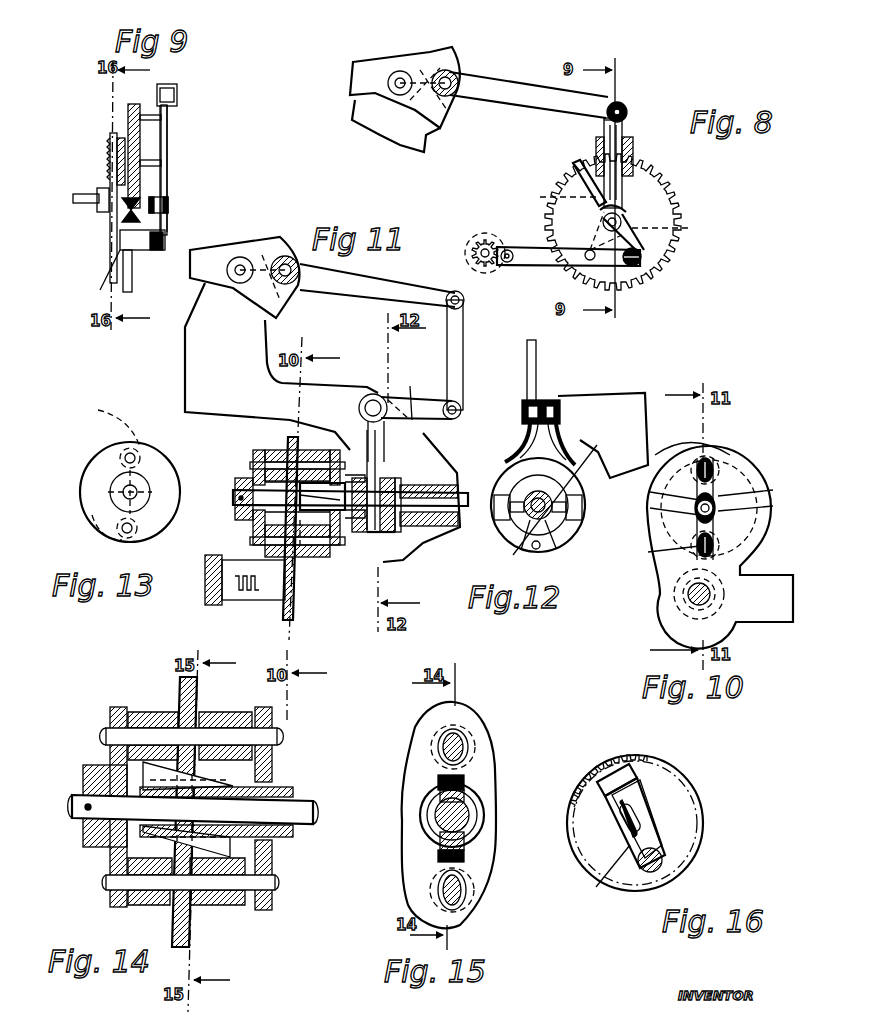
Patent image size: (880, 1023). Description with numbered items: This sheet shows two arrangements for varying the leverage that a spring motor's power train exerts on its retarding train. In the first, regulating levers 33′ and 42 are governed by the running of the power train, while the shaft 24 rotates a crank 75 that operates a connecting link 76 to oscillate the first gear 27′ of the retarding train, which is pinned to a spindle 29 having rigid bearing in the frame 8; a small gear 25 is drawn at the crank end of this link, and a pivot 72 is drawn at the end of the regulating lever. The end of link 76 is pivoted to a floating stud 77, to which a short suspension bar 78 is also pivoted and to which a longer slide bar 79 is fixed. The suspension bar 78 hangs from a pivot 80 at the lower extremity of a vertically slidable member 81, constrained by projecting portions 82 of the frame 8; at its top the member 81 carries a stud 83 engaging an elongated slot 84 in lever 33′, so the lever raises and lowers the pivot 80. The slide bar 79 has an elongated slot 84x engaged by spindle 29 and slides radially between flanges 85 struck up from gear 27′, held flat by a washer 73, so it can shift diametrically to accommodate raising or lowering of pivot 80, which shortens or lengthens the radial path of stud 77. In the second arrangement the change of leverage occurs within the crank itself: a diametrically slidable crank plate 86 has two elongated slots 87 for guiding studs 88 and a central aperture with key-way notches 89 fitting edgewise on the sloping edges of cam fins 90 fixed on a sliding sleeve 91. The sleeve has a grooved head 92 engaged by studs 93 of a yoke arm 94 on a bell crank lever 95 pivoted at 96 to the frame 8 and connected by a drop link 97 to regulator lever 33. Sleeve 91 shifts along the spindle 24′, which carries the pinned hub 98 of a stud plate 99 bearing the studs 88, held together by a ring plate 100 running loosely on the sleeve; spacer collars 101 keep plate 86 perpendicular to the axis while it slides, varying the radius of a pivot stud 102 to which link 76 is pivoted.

In FIG. 9, the frame 8 is at (130, 107).
In FIG. 8, the frame 8 is at (385, 130).
In FIG. 11, the frame 8 is at (458, 446).
In FIG. 12, the frame 8 is at (603, 435).
In FIG. 15, the shaft of the power train 24 is at (470, 815).
In FIG. 11, the spindle 24′ is at (466, 494).
In FIG. 12, the spindle 24′ is at (494, 488).
In FIG. 10, the spindle 24′ is at (696, 508).
In FIG. 13, the spindle 24′ is at (134, 488).
In FIG. 14, the spindle 24′ is at (313, 812).
In FIG. 8, the gear 25 is at (485, 242).
In FIG. 9, the first gear of the retarding train 27′ is at (109, 141).
In FIG. 8, the first gear of the retarding train 27′ is at (672, 183).
In FIG. 16, the first gear of the retarding train 27′ is at (629, 758).
In FIG. 9, the spindle 29 is at (92, 194).
In FIG. 16, the spindle 29 is at (640, 820).
In FIG. 11, the regulator lever 33 is at (377, 285).
In FIG. 9, the regulating lever 33′ is at (172, 87).
In FIG. 8, the regulating lever 33′ is at (529, 95).
In FIG. 8, the regulating lever 42 is at (372, 70).
In FIG. 11, the pivot 72 is at (463, 306).
In FIG. 9, the washer 73 is at (125, 213).
In FIG. 8, the washer 73 is at (603, 223).
In FIG. 8, the crank 75 is at (495, 268).
In FIG. 9, the connecting link 76 is at (155, 256).
In FIG. 8, the connecting link 76 is at (530, 247).
In FIG. 11, the connecting link 76 is at (205, 602).
In FIG. 10, the connecting link 76 is at (793, 606).
In FIG. 9, the floating stud 77 is at (166, 246).
In FIG. 8, the floating stud 77 is at (641, 266).
In FIG. 16, the floating stud 77 is at (660, 856).
In FIG. 9, the suspension bar 78 is at (166, 236).
In FIG. 8, the suspension bar 78 is at (644, 256).
In FIG. 9, the slide bar 79 is at (117, 237).
In FIG. 8, the slide bar 79 is at (572, 164).
In FIG. 16, the slide bar 79 is at (640, 806).
In FIG. 9, the pivot 80 is at (168, 198).
In FIG. 8, the pivot 80 is at (628, 218).
In FIG. 9, the vertically slidable member 81 is at (167, 158).
In FIG. 8, the vertically slidable member 81 is at (625, 135).
In FIG. 9, the projecting portions of the frame 82 is at (150, 125).
In FIG. 8, the projecting portions of the frame 82 is at (634, 142).
In FIG. 9, the stud 83 is at (178, 96).
In FIG. 8, the stud 83 is at (625, 110).
In FIG. 8, the elongated slot 84 is at (605, 118).
In FIG. 8, the elongated slot 84x is at (617, 207).
In FIG. 16, the elongated slot 84x is at (603, 874).
In FIG. 9, the flanges 85 is at (115, 162).
In FIG. 8, the flanges 85 is at (634, 162).
In FIG. 16, the flanges 85 is at (604, 792).
In FIG. 11, the diametrically slidable plate 86 is at (288, 445).
In FIG. 10, the diametrically slidable plate 86 is at (722, 484).
In FIG. 14, the diametrically slidable plate 86 is at (182, 690).
In FIG. 15, the diametrically slidable plate 86 is at (480, 765).
In FIG. 11, the elongated slots 87 is at (310, 546).
In FIG. 10, the elongated slots 87 is at (714, 470).
In FIG. 11, the guiding studs 88 is at (253, 462).
In FIG. 12, the guiding studs 88 is at (531, 546).
In FIG. 10, the guiding studs 88 is at (700, 466).
In FIG. 13, the guiding studs 88 is at (125, 456).
In FIG. 14, the guiding studs 88 is at (278, 738).
In FIG. 15, the guiding studs 88 is at (465, 745).
In FIG. 10, the key-way notches 89 is at (748, 502).
In FIG. 15, the key-way notches 89 is at (440, 782).
In FIG. 11, the fins 90 is at (253, 473).
In FIG. 10, the fins 90 is at (718, 508).
In FIG. 14, the fins 90 is at (182, 797).
In FIG. 15, the fins 90 is at (465, 781).
In FIG. 11, the sliding sleeve 91 is at (322, 452).
In FIG. 12, the sliding sleeve 91 is at (557, 548).
In FIG. 14, the sliding sleeve 91 is at (290, 792).
In FIG. 15, the sliding sleeve 91 is at (470, 823).
In FIG. 11, the grooved head 92 is at (381, 535).
In FIG. 12, the grooved head 92 is at (550, 490).
In FIG. 11, the studs 93 is at (410, 488).
In FIG. 12, the studs 93 is at (583, 510).
In FIG. 11, the yoke arm 94 is at (384, 446).
In FIG. 12, the yoke arm 94 is at (525, 460).
In FIG. 11, the bell crank lever 95 is at (410, 386).
In FIG. 12, the bell crank lever 95 is at (538, 398).
In FIG. 11, the pivot 96 is at (374, 394).
In FIG. 12, the pivot 96 is at (559, 406).
In FIG. 11, the drop link 97 is at (463, 356).
In FIG. 11, the hub 98 is at (237, 490).
In FIG. 13, the hub 98 is at (112, 492).
In FIG. 14, the hub 98 is at (95, 768).
In FIG. 11, the stud plate 99 is at (240, 520).
In FIG. 10, the stud plate 99 is at (755, 530).
In FIG. 13, the stud plate 99 is at (100, 470).
In FIG. 14, the stud plate 99 is at (110, 868).
In FIG. 11, the ring plate 100 is at (365, 556).
In FIG. 12, the ring plate 100 is at (546, 550).
In FIG. 14, the ring plate 100 is at (275, 862).
In FIG. 11, the spacer collars 101 is at (305, 440).
In FIG. 10, the spacer collars 101 is at (752, 456).
In FIG. 13, the spacer collars 101 is at (90, 468).
In FIG. 14, the spacer collars 101 is at (130, 712).
In FIG. 15, the spacer collars 101 is at (478, 722).
In FIG. 11, the pivot stud 102 is at (225, 600).
In FIG. 10, the pivot stud 102 is at (690, 604).